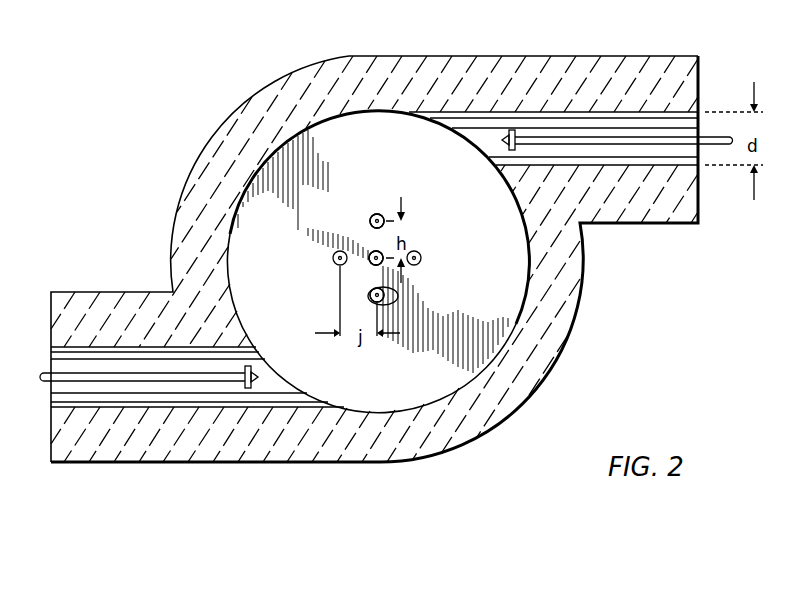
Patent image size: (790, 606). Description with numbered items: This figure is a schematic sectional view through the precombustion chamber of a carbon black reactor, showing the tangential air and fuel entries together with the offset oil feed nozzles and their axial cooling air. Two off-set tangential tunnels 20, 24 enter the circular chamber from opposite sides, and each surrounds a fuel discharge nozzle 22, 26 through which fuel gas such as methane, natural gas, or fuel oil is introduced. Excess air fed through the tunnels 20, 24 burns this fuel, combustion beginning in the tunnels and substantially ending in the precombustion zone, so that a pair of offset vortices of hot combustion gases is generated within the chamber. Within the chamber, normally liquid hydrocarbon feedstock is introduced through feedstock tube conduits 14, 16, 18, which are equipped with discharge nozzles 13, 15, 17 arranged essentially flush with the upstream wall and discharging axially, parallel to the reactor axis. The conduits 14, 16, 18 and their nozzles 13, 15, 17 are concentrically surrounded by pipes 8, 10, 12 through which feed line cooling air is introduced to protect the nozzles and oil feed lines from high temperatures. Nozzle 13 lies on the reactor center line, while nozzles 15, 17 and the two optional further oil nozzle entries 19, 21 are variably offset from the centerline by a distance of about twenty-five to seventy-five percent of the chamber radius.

The pipe 8 is at (383, 254).
The pipe 10 is at (371, 216).
The pipe 12 is at (397, 302).
The discharge nozzle 13 is at (370, 254).
The feedstock tube conduit 14 is at (357, 234).
The discharge nozzle 15 is at (369, 222).
The feedstock tube conduit 16 is at (364, 187).
The discharge nozzle 17 is at (384, 292).
The feedstock tube conduit 18 is at (420, 284).
The oil nozzle entry 19 is at (333, 257).
The off-set tangential tunnel 20 is at (486, 152).
The oil nozzle entry 21 is at (421, 257).
The fuel discharge nozzle 22 is at (517, 127).
The off-set tangential tunnel 24 is at (292, 392).
The fuel discharge nozzle 26 is at (257, 378).